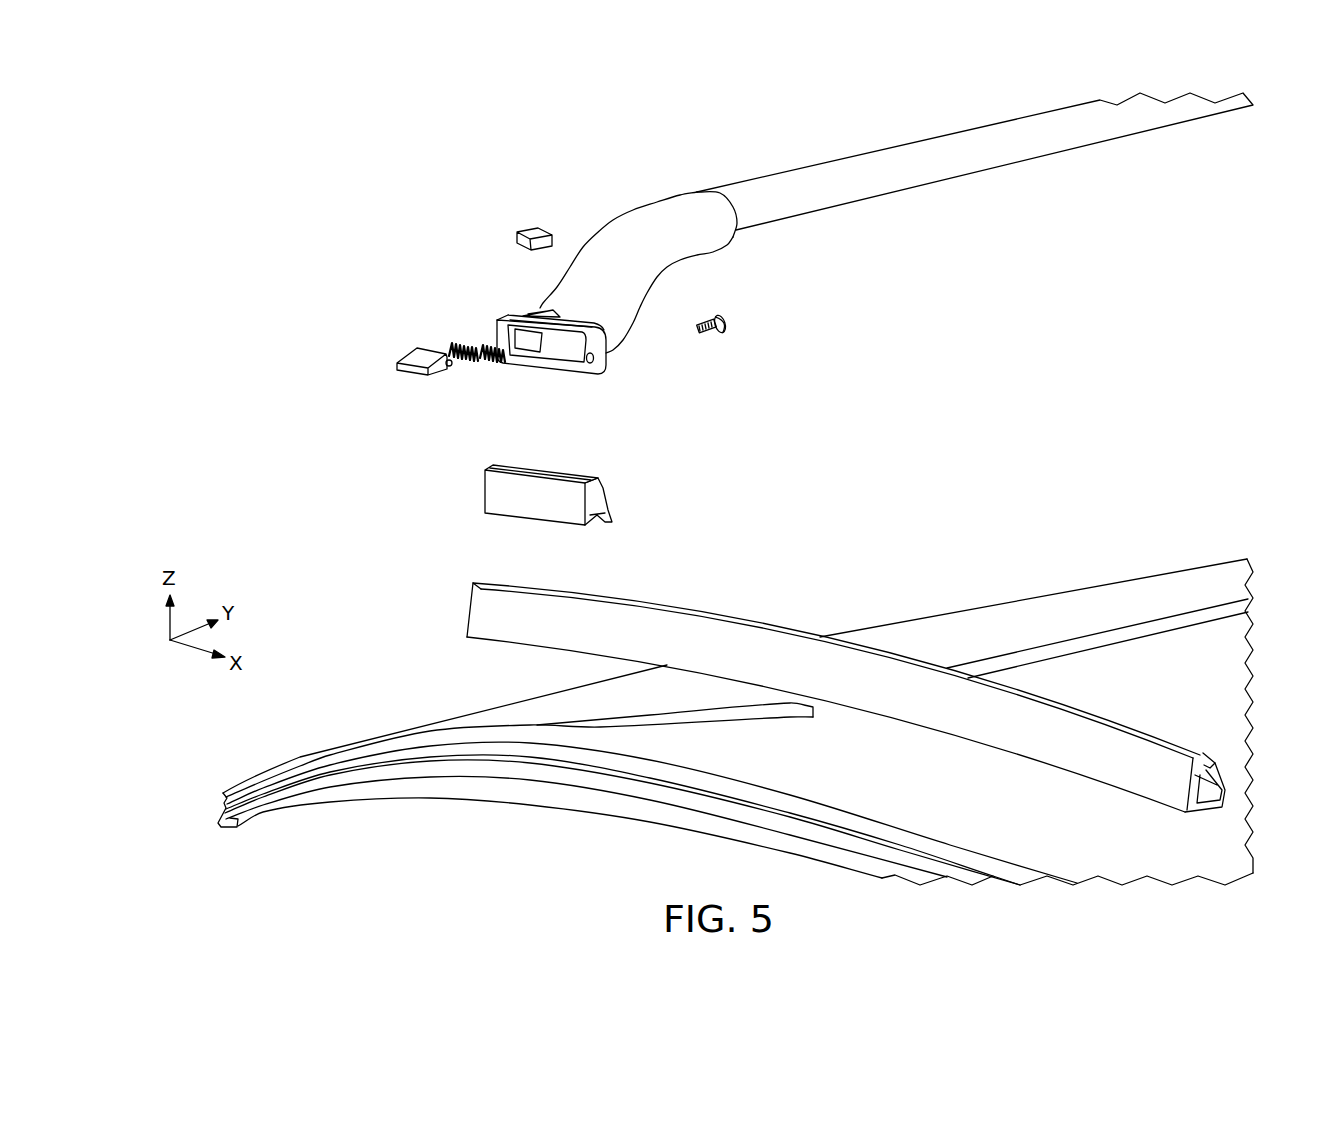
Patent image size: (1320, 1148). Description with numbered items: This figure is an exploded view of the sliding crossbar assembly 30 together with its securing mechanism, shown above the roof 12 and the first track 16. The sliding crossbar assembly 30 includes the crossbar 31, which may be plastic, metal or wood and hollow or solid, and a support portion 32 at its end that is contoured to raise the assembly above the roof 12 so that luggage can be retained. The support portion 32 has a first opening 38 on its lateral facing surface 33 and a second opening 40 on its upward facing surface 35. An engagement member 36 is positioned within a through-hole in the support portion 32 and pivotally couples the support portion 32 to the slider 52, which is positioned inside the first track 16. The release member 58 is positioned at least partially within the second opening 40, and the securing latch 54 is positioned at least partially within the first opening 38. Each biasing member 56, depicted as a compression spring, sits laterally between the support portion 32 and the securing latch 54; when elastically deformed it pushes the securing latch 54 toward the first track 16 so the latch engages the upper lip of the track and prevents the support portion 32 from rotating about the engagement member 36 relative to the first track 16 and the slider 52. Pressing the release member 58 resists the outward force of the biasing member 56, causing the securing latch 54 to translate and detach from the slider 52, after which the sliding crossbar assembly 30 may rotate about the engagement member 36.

The roof 12 is at (1115, 577).
The first track 16 is at (708, 610).
The sliding crossbar assembly 30 is at (838, 137).
The crossbar 31 is at (1000, 163).
The support portion 32 is at (705, 255).
The lateral facing surface 33 is at (563, 355).
The upward facing surface 35 is at (584, 321).
The engagement member 36 is at (733, 327).
The first opening 38 is at (524, 341).
The second opening 40 is at (541, 313).
The slider 52 is at (612, 495).
The securing latch 54 is at (431, 372).
The biasing member 56 is at (453, 343).
The release member 58 is at (532, 231).